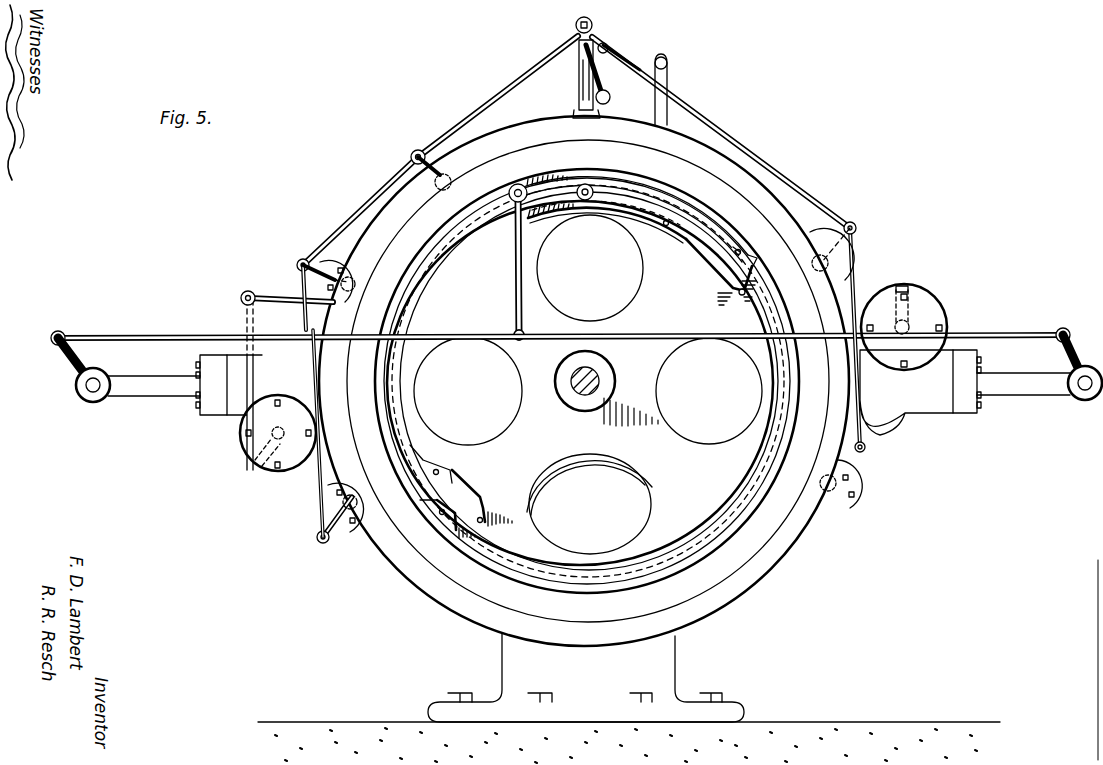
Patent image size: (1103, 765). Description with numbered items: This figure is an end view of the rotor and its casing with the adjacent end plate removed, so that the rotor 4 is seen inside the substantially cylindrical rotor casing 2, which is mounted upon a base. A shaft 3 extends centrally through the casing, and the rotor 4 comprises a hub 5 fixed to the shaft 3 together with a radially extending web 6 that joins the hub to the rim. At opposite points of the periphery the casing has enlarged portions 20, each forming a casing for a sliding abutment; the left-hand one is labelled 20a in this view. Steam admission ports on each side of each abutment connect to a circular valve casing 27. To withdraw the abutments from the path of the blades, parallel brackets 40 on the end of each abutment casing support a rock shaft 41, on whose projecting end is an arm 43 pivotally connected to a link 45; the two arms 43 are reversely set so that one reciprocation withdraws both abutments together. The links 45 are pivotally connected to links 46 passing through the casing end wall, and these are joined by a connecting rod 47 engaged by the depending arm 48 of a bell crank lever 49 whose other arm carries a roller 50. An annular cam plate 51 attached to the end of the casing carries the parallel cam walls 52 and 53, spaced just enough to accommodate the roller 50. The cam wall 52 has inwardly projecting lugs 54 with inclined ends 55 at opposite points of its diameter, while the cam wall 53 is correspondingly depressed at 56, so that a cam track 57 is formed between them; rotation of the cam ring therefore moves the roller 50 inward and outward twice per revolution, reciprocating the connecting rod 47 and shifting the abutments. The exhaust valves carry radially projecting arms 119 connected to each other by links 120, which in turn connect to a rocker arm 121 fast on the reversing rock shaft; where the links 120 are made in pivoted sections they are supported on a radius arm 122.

The rotor casing 2 is at (758, 186).
The shaft 3 is at (576, 378).
The rotor 4 is at (709, 391).
The hub 5 is at (580, 404).
The web 6 is at (597, 476).
The enlarged portion 20 is at (900, 404).
The cylinder 20a is at (236, 404).
The valve casing 27 is at (262, 458).
The brackets 40 is at (155, 386).
The rock shaft 41 is at (102, 384).
The arm 43 is at (68, 360).
The link 45 is at (192, 336).
The links 46 is at (376, 343).
The connecting rod 47 is at (636, 340).
The depending arm 48 is at (524, 263).
The bell crank lever 49 is at (518, 183).
The roller 50 is at (600, 188).
The annular cam plate 51 is at (764, 304).
The cam wall 52 is at (705, 232).
The cam wall 53 is at (662, 222).
The lugs 54 is at (742, 256).
The inclined ends 55 is at (726, 290).
The inward depression 56 is at (699, 262).
The cam track 57 is at (706, 540).
The radially projecting arm 119 is at (310, 270).
The links 120 is at (518, 90).
The rocker arm 121 is at (607, 70).
The radius arm 122 is at (425, 150).